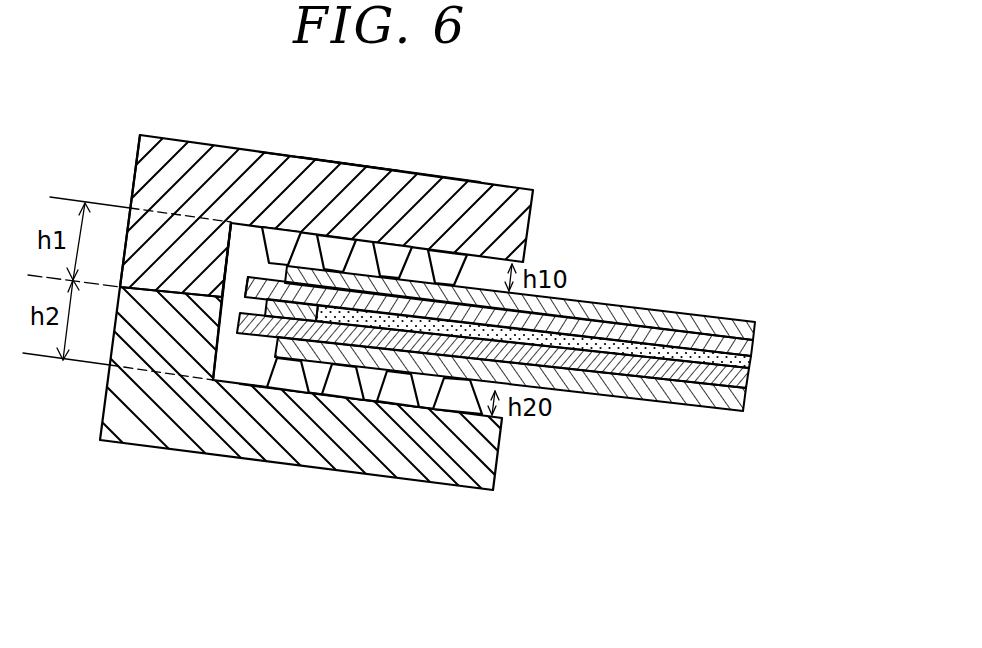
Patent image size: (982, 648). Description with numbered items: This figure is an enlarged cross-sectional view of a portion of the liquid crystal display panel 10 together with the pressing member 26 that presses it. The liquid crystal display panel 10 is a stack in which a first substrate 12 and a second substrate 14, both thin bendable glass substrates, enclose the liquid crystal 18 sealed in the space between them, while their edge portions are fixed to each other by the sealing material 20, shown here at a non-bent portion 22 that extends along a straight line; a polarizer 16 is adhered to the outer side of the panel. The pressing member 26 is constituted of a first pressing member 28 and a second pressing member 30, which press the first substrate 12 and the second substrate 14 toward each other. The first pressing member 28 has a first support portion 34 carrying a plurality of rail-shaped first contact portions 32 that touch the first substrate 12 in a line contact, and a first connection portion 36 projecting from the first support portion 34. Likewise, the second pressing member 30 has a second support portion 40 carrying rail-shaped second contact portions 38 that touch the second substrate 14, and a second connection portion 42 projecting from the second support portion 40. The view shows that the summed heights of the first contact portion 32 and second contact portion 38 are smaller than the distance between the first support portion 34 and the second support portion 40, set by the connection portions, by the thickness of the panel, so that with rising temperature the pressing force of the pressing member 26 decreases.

The liquid crystal display panel 10 is at (531, 372).
The first substrate 12 is at (641, 328).
The second substrate 14 is at (618, 380).
The polarizer 16 is at (699, 345).
The liquid crystal 18 is at (747, 367).
The sealing material 20 is at (262, 326).
The non-bent portion 22 is at (285, 286).
The pressing member 26 is at (361, 202).
The first pressing member 28 is at (385, 168).
The second pressing member 30 is at (291, 412).
The first contact portion 32 is at (445, 262).
The first support portion 34 is at (326, 165).
The first connection portion 36 is at (213, 257).
The second contact portion 38 is at (455, 400).
The second support portion 40 is at (348, 445).
The second connection portion 42 is at (215, 345).